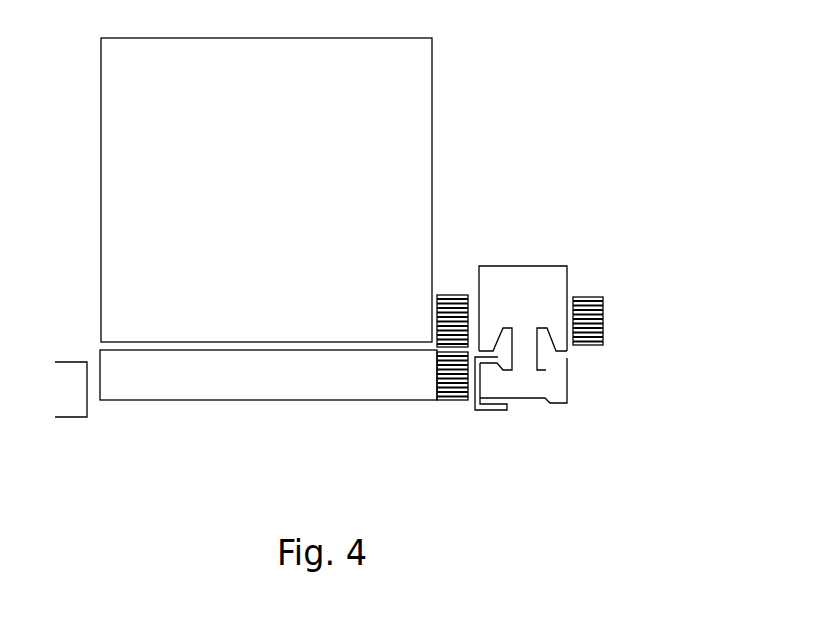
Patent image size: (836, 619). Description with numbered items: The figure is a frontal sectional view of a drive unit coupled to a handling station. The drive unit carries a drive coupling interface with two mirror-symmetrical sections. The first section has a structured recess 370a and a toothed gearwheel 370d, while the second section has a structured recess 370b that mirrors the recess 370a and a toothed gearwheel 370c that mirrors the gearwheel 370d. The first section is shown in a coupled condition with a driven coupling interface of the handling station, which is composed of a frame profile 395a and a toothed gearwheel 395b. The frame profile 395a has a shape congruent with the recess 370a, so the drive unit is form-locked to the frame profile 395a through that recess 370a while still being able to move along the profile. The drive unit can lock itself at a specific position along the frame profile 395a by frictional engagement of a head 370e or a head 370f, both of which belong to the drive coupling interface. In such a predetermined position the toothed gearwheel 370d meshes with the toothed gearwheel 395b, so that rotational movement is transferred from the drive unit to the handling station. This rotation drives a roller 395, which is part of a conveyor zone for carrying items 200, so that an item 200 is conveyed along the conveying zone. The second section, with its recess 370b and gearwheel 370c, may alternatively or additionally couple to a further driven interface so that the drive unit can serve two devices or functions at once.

The item 200 is at (291, 207).
The roller 395 is at (268, 387).
The frame profile 395a is at (483, 413).
The toothed gearwheel 395b is at (448, 390).
The structured recess 370a is at (505, 327).
The structured recess 370b is at (546, 366).
The toothed gearwheel 370c is at (589, 312).
The toothed gearwheel 370d is at (452, 300).
The head 370e is at (498, 383).
The head 370f is at (557, 384).